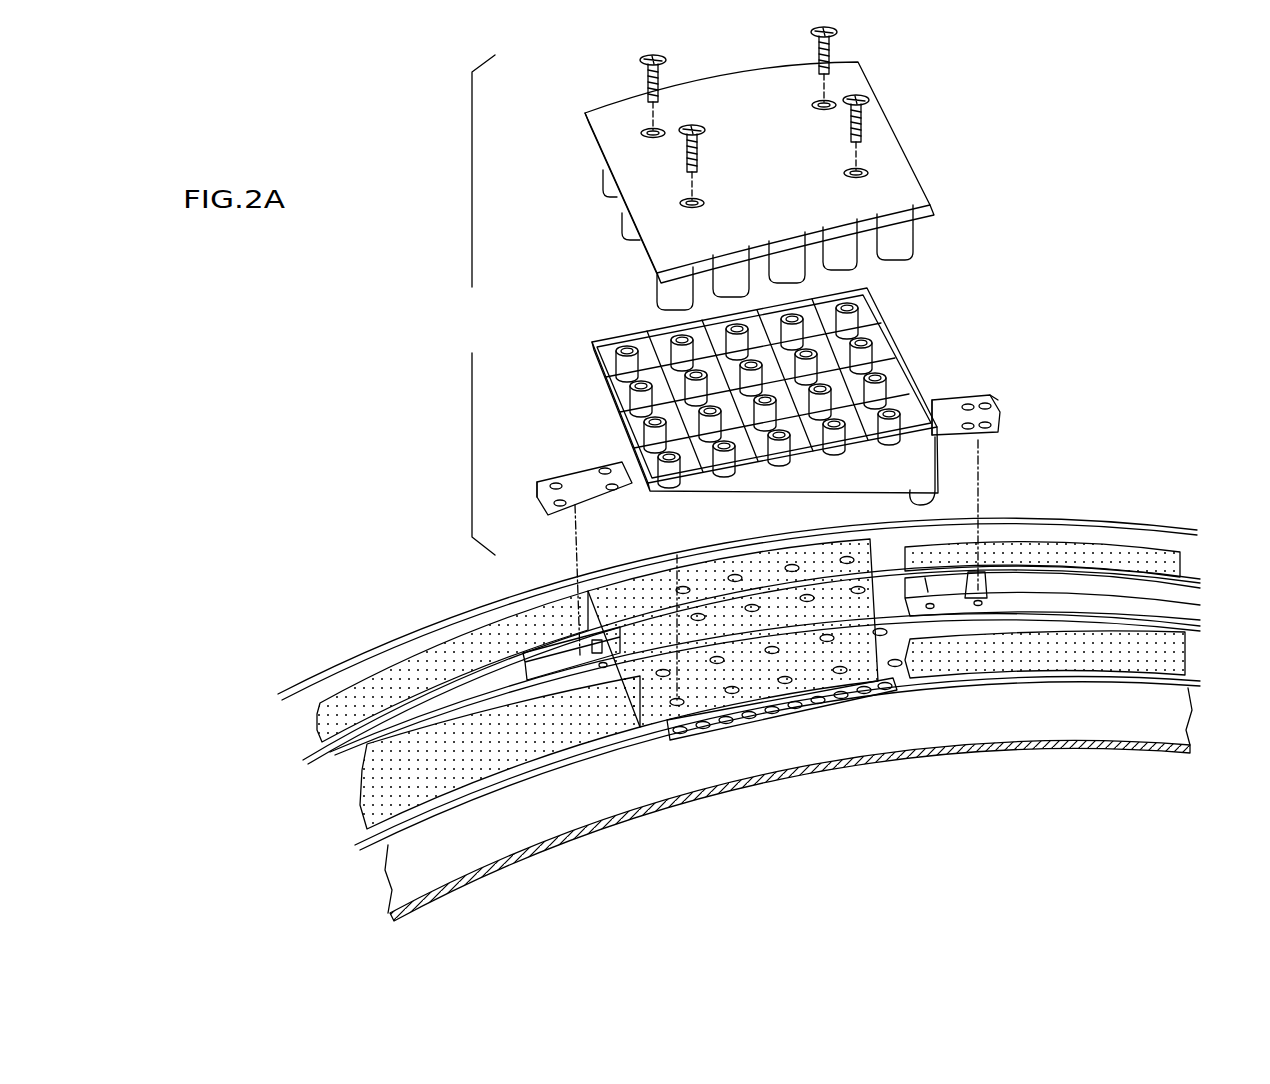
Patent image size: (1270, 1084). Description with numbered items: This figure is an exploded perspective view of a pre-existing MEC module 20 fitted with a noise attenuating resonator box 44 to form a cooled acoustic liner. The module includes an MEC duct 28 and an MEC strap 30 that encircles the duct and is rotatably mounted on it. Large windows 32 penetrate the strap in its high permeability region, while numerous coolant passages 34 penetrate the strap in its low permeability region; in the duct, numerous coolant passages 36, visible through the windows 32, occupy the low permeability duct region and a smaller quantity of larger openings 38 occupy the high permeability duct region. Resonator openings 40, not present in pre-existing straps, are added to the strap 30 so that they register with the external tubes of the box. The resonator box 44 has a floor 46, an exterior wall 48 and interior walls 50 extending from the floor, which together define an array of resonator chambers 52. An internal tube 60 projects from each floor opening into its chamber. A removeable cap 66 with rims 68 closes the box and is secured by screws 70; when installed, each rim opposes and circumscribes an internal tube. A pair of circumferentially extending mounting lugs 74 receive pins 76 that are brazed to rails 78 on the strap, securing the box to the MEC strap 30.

The MEC module 20 is at (997, 265).
The MEC duct 28 is at (1163, 730).
The MEC strap 30 is at (1115, 540).
The large windows 32 is at (336, 706).
The coolant passages 34 is at (745, 621).
The coolant passages 36 is at (440, 788).
The larger openings 38 is at (648, 748).
The resonator openings 40 is at (787, 660).
The noise attenuating resonator box 44 is at (475, 305).
The floor 46 is at (943, 507).
The exterior wall 48 is at (745, 381).
The interior walls 50 is at (650, 346).
The resonator chambers 52 is at (770, 322).
The internal tube 60 is at (614, 357).
The removeable cap 66 is at (756, 93).
The rims 68 is at (657, 290).
The screws 70 is at (646, 58).
The mounting lugs 74 is at (546, 482).
The pins 76 is at (578, 660).
The rails 78 is at (483, 712).